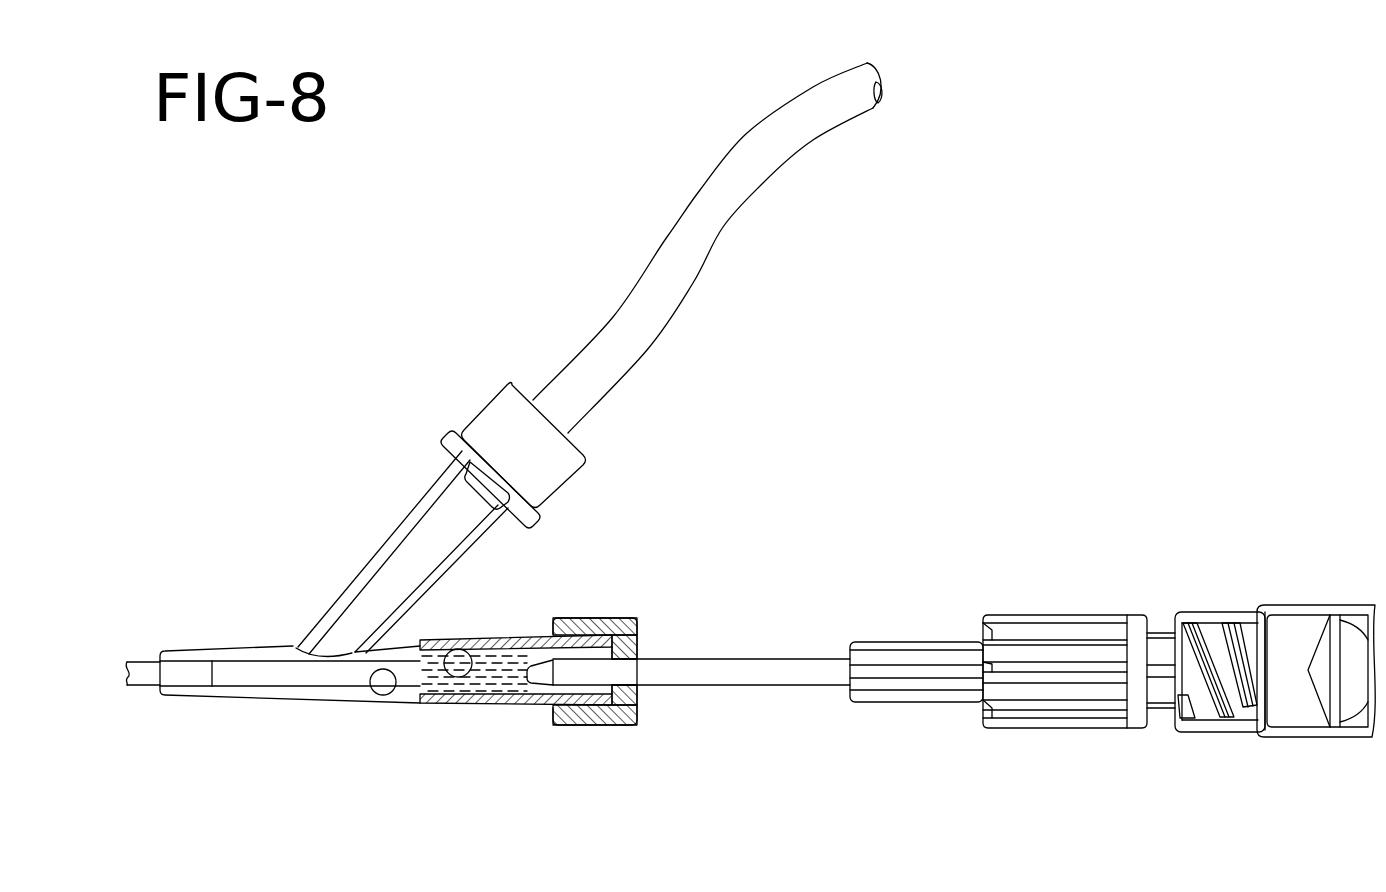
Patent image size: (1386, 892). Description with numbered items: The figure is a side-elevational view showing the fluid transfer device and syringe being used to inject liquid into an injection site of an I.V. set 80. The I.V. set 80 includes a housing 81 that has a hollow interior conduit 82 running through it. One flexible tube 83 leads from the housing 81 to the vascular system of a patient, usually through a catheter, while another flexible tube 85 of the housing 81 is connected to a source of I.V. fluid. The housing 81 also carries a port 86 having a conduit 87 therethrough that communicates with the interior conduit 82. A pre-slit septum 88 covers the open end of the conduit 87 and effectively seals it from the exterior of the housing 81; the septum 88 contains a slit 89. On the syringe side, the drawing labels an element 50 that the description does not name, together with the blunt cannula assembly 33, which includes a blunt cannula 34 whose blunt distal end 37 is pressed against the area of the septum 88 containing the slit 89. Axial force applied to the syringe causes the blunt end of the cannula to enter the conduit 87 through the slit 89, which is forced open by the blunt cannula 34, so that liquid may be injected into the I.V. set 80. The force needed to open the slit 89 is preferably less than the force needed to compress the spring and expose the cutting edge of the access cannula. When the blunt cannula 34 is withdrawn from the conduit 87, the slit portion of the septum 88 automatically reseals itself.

The blunt cannula assembly 33 is at (1030, 614).
The blunt cannula 34 is at (748, 657).
The blunt distal end 37 is at (518, 692).
The connector assembly 50 is at (1280, 608).
The I.V. set 80 is at (352, 585).
The housing 81 is at (303, 698).
The hollow interior conduit 82 is at (366, 688).
The flexible tube 83 is at (148, 663).
The flexible tube 85 is at (667, 283).
The port 86 is at (500, 703).
The conduit 87 is at (443, 647).
The pre-slit septum 88 is at (590, 727).
The slit 89 is at (630, 680).